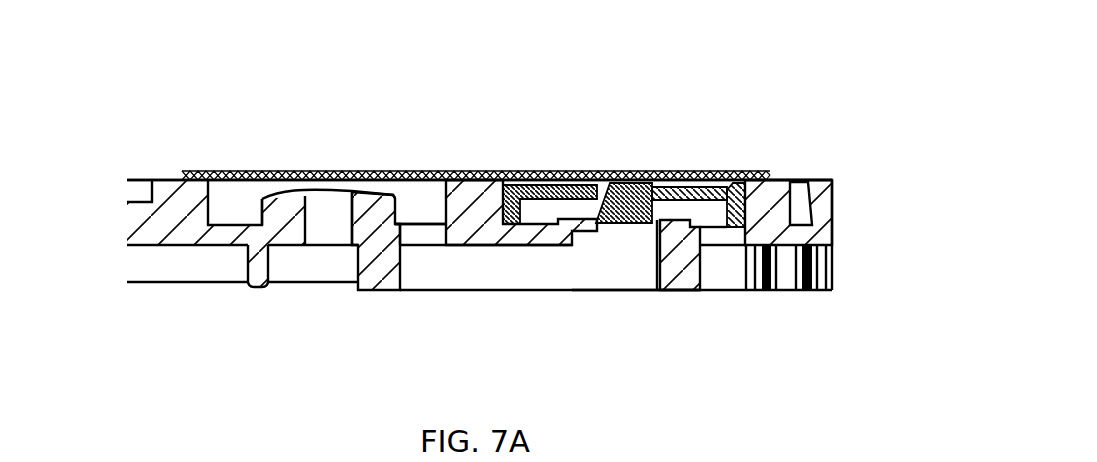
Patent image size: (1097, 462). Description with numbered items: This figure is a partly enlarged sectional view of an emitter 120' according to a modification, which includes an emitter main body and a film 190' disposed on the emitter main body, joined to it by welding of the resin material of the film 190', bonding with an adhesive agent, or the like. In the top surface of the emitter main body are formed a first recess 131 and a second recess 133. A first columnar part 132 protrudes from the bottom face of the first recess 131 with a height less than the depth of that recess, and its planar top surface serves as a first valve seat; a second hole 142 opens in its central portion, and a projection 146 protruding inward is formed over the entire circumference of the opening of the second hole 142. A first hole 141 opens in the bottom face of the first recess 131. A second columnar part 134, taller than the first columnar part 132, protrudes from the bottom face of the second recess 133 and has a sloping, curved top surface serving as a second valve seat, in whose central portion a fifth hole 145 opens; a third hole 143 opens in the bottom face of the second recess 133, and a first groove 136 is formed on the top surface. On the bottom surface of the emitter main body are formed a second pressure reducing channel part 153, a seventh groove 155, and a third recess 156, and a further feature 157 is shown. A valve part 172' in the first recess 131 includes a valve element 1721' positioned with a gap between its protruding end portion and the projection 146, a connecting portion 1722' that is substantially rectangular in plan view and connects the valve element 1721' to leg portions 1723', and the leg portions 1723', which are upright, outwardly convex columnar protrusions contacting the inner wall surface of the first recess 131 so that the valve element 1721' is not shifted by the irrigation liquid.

The emitter 120' is at (498, 91).
The film 190' is at (476, 140).
The third recess 156 is at (155, 262).
The protrusion 157 is at (257, 290).
The first groove 136 is at (290, 191).
The fifth hole 145 is at (327, 240).
The second columnar part 134 is at (372, 191).
The third hole 143 is at (425, 240).
The second recess 133 is at (445, 200).
The first recess 131 is at (530, 222).
The seventh groove 155 is at (500, 283).
The second hole 142 is at (623, 247).
The valve part 172' is at (690, 123).
The valve element 1721' is at (636, 158).
The connecting portion 1722' is at (689, 131).
The leg portions 1723' is at (743, 160).
The projection 146 is at (655, 228).
The first columnar part 132 is at (687, 222).
The first hole 141 is at (727, 255).
The second pressure reducing channel part 153 is at (795, 283).